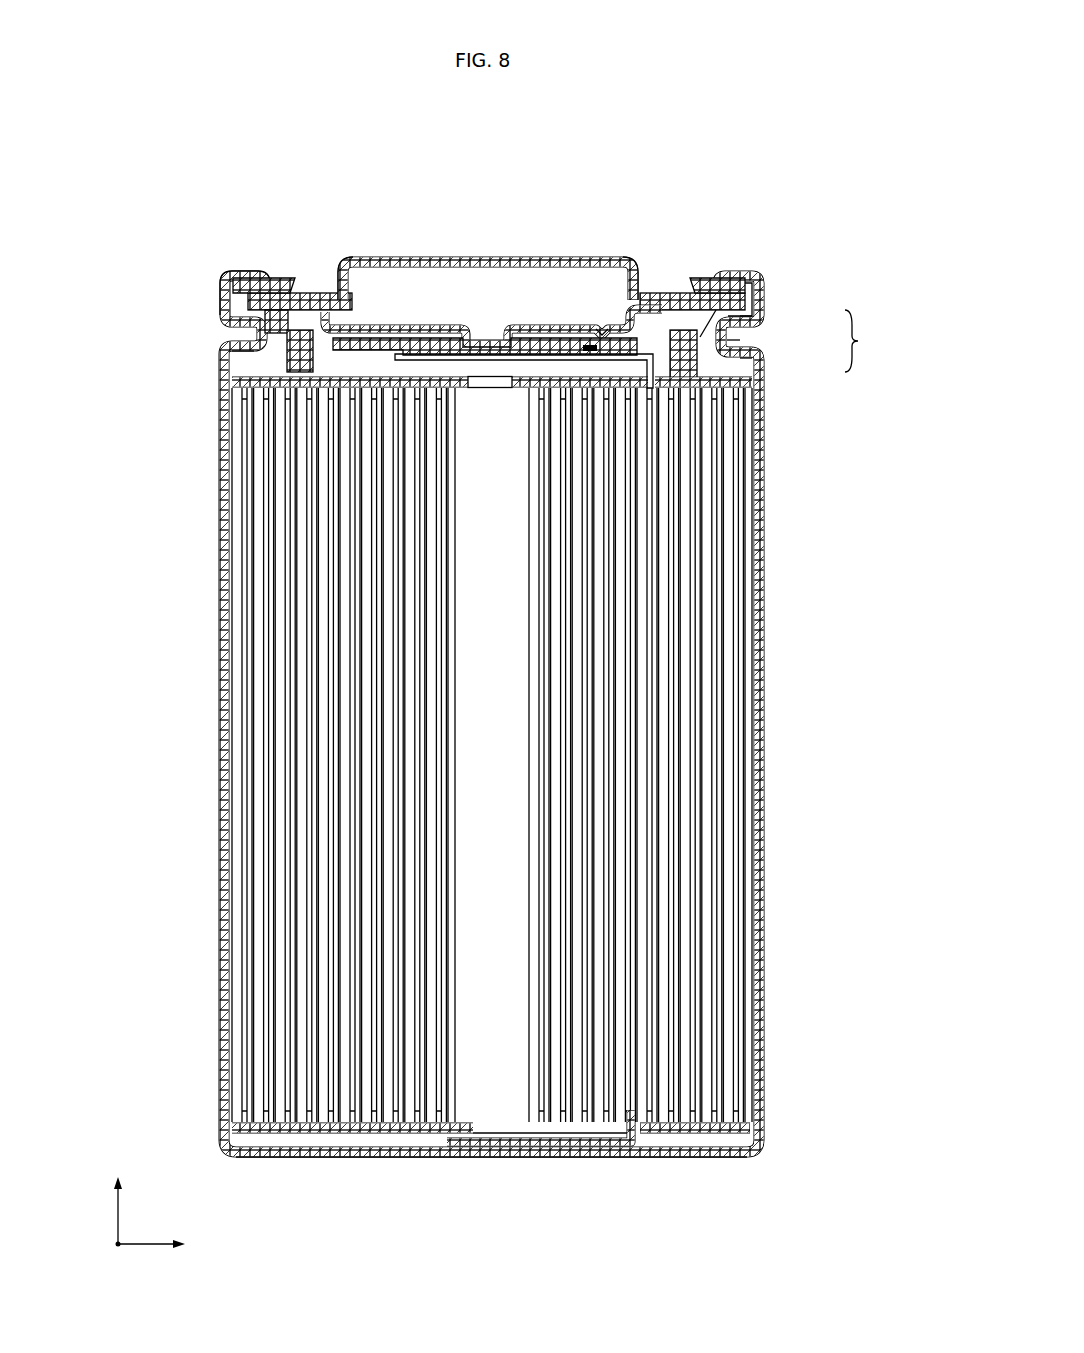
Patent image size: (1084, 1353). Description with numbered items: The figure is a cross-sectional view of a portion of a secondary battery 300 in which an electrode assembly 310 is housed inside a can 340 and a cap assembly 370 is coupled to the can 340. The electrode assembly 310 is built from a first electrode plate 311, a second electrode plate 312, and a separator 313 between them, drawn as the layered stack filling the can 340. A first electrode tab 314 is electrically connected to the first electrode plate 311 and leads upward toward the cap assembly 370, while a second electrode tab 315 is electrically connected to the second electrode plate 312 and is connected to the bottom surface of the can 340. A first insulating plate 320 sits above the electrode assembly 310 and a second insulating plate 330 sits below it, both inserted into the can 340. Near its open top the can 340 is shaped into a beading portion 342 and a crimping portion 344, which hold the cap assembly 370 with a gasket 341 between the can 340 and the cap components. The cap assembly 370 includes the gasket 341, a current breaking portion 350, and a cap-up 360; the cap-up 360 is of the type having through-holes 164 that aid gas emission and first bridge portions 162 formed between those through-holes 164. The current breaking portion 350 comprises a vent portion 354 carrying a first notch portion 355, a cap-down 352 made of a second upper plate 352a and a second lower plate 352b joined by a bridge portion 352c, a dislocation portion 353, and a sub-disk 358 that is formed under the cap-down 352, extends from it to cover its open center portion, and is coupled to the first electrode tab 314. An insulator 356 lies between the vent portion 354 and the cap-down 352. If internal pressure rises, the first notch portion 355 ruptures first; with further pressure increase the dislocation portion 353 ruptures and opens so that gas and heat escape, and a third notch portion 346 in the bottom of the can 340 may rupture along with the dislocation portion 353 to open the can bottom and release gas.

The secondary battery 300 is at (842, 158).
The electrode assembly 310 is at (565, 755).
The first electrode plate 311 is at (738, 456).
The second electrode plate 312 is at (692, 557).
The separator 313 is at (707, 496).
The first electrode tab 314 is at (655, 388).
The second electrode tab 315 is at (483, 1140).
The first insulating plate 320 is at (747, 386).
The second insulating plate 330 is at (745, 1131).
The can 340 is at (772, 764).
The gasket 341 is at (238, 300).
The beading portion 342 is at (234, 341).
The crimping portion 344 is at (250, 272).
The third notch portion 346 is at (588, 1160).
The current breaking portion 350 is at (469, 318).
The cap-down 352 is at (812, 329).
The second upper plate 352a is at (742, 317).
The second lower plate 352b is at (742, 360).
The bridge portion 352c is at (742, 340).
The dislocation portion 353 is at (588, 345).
The vent portion 354 is at (745, 300).
The first notch portion 355 is at (603, 325).
The insulator 356 is at (671, 318).
The sub-disk 358 is at (490, 357).
The cap-up 360 is at (490, 256).
The cap assembly 370 is at (675, 228).
The first bridge portions 162 is at (347, 266).
The through-holes 164 is at (633, 258).